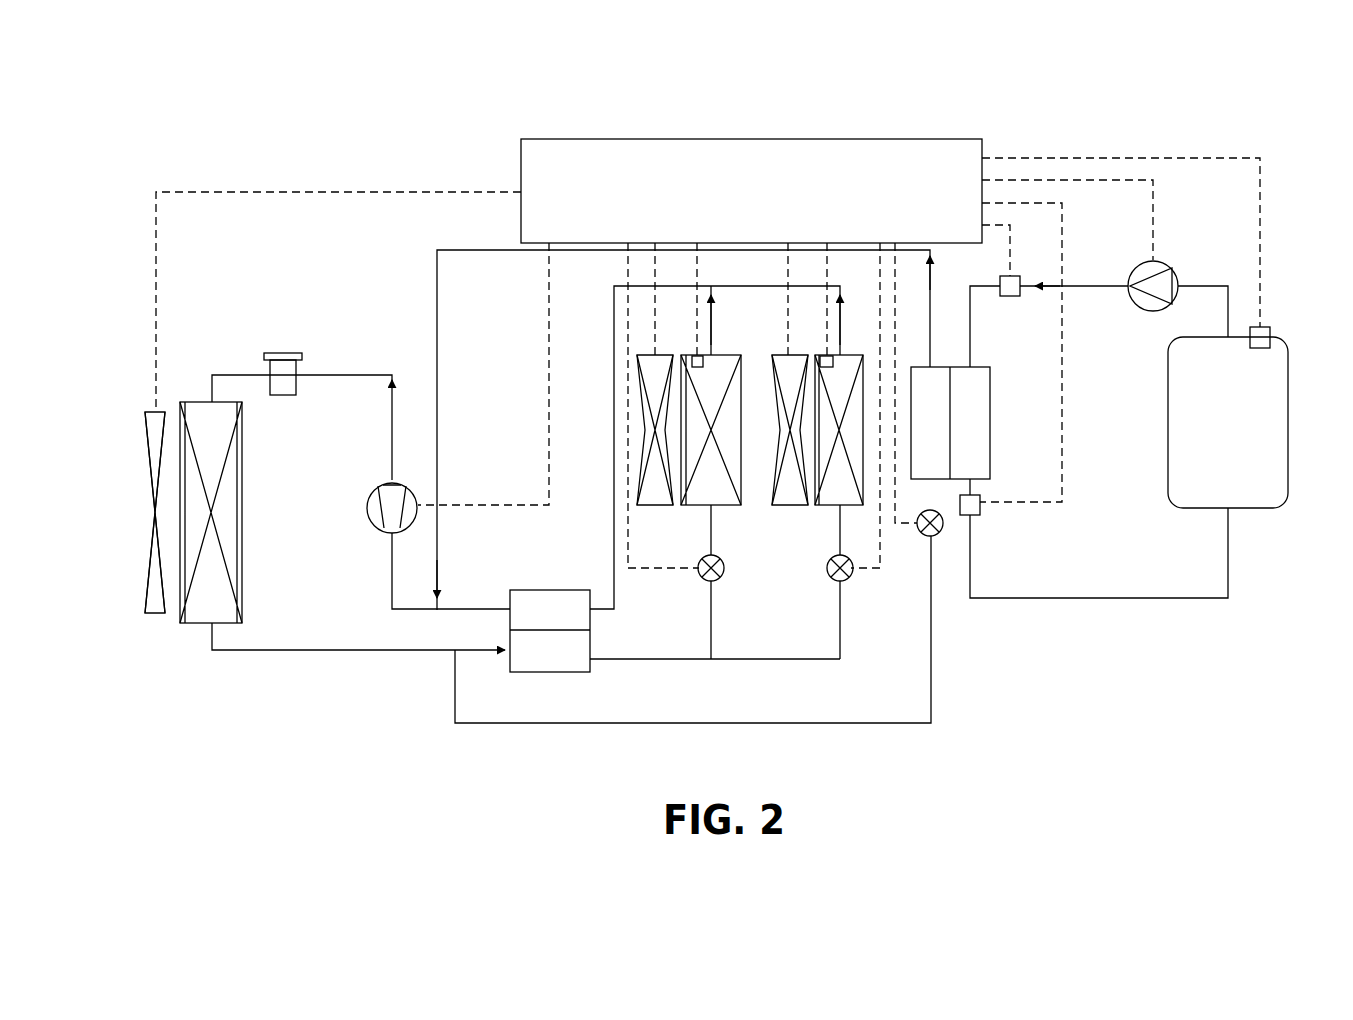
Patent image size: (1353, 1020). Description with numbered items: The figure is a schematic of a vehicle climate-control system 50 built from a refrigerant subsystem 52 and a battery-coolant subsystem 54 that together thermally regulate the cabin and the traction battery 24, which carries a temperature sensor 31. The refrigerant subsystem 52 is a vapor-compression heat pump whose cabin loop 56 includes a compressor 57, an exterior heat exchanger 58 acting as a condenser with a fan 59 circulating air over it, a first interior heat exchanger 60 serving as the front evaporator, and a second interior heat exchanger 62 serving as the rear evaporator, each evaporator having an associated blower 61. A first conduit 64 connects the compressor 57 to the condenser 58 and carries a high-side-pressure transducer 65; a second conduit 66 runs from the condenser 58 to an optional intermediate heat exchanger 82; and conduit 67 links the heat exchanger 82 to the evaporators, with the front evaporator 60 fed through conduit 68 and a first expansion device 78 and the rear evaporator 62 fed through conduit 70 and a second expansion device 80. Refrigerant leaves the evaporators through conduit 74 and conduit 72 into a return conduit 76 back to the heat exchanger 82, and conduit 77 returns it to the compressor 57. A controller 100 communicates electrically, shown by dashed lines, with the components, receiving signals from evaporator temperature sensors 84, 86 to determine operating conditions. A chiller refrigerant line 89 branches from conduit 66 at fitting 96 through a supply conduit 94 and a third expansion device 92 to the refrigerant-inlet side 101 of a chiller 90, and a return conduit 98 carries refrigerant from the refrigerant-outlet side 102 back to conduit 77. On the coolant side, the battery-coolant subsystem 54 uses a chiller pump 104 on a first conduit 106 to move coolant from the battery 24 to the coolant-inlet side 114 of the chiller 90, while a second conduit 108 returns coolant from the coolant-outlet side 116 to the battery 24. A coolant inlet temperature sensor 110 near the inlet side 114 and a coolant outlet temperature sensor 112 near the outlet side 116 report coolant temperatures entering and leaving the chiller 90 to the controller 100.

The traction battery 24 is at (1290, 428).
The temperature sensor 31 is at (1272, 332).
The climate-control system 50 is at (1245, 86).
The refrigerant subsystem 52 is at (524, 407).
The battery-coolant subsystem 54 is at (1245, 568).
The cabin loop 56 is at (607, 328).
The compressor 57 is at (368, 508).
The exterior heat exchanger 58 is at (196, 402).
The fan 59 is at (155, 613).
The first interior heat exchanger 60 is at (722, 355).
The blower 61 is at (650, 484).
The second interior heat exchanger 62 is at (860, 355).
The first conduit 64 is at (321, 375).
The high-side-pressure transducer 65 is at (281, 353).
The second conduit 66 is at (343, 652).
The conduit 67 is at (655, 661).
The conduit 68 is at (711, 612).
The conduit 70 is at (840, 622).
The conduit 72 is at (843, 312).
The conduit 74 is at (714, 318).
The return conduit 76 is at (614, 543).
The conduit 77 is at (392, 572).
The first expansion device 78 is at (701, 578).
The second expansion device 80 is at (848, 557).
The intermediate heat exchanger 82 is at (512, 590).
The temperature sensor 84 is at (694, 356).
The temperature sensor 86 is at (823, 356).
The chiller refrigerant line 89 is at (948, 691).
The chiller 90 is at (990, 459).
The third expansion device 92 is at (935, 540).
The supply conduit 94 is at (887, 725).
The fitting 96 is at (455, 652).
The return conduit 98 is at (933, 318).
The controller 100 is at (765, 139).
The refrigerant-inlet side 101 is at (920, 535).
The refrigerant-outlet side 102 is at (1042, 178).
The chiller pump 104 is at (1178, 276).
The first conduit 106 is at (1090, 286).
The second conduit 108 is at (1103, 598).
The coolant inlet temperature sensor 110 is at (1010, 297).
The coolant outlet temperature sensor 112 is at (975, 516).
The coolant-inlet side 114 is at (972, 367).
The coolant-outlet side 116 is at (982, 511).